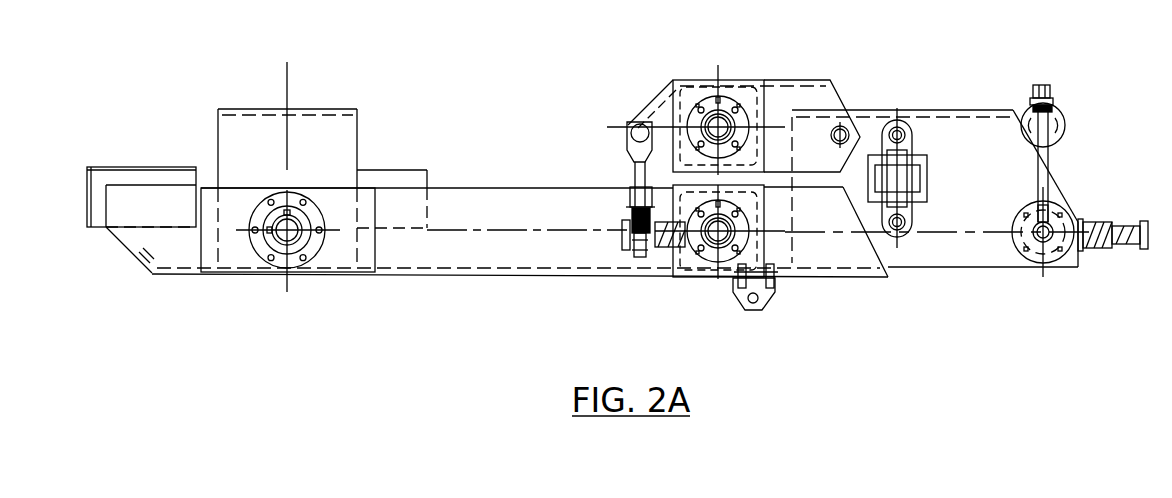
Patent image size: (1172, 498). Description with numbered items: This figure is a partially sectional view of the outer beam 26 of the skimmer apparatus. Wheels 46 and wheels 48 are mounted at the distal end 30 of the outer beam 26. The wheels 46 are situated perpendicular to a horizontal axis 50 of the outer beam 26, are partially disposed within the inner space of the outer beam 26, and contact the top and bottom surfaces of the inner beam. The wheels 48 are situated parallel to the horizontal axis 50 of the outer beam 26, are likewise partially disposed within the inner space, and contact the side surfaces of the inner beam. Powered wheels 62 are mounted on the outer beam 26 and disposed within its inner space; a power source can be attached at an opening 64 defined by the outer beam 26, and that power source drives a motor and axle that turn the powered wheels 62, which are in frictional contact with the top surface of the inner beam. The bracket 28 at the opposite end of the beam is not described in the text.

The outer beam 26 is at (403, 273).
The mounting bracket 28 is at (143, 262).
The distal end 30 is at (1062, 257).
The wheels 46 is at (1056, 108).
The wheels 48 is at (921, 160).
The horizontal axis 50 is at (509, 248).
The powered wheels 62 is at (685, 103).
The opening 64 is at (730, 107).